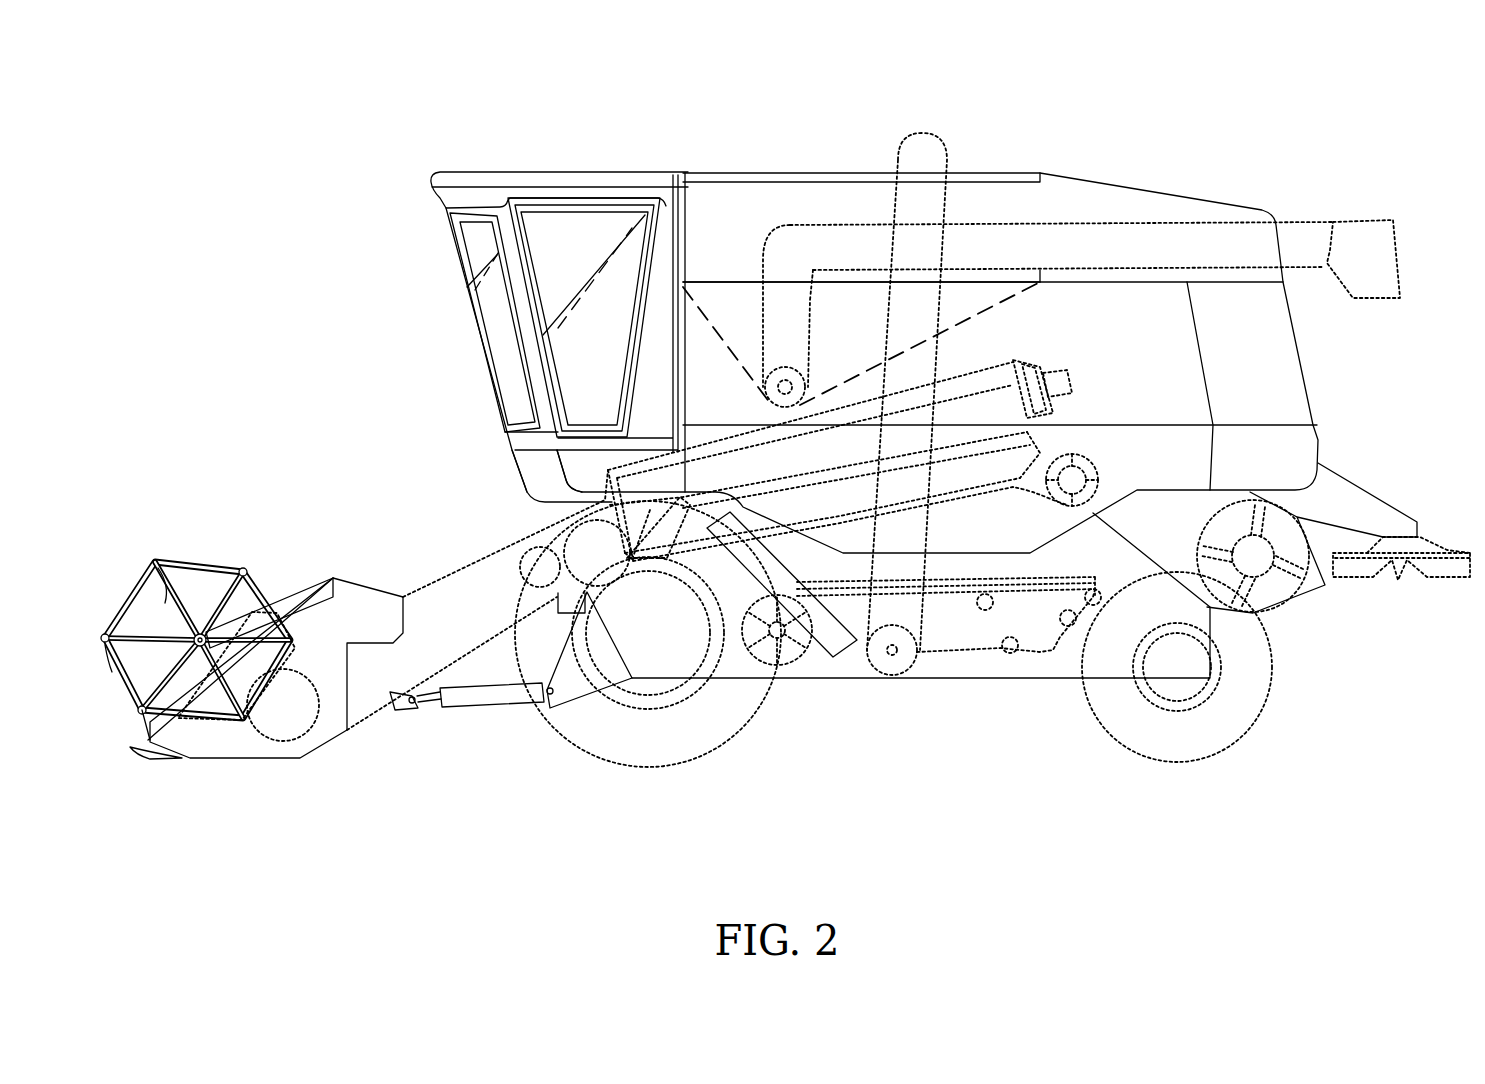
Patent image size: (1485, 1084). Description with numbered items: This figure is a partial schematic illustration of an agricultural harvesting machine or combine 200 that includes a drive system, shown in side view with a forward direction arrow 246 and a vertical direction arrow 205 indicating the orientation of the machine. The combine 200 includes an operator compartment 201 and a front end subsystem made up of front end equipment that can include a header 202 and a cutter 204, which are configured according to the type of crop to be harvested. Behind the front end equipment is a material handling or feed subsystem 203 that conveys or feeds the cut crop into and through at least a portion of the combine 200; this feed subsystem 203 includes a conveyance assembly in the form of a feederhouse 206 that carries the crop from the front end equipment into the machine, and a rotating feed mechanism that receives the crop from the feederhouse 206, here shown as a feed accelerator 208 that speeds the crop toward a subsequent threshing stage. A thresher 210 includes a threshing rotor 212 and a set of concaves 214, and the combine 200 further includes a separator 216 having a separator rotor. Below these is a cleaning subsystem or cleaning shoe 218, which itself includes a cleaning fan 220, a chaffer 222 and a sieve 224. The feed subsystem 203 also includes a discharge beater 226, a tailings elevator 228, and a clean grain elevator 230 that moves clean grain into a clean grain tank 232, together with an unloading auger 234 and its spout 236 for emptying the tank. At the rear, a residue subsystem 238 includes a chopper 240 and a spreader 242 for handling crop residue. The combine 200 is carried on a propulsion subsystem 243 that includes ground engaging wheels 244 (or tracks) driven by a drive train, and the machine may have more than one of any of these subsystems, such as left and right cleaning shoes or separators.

The combine 200 is at (1314, 77).
The operator compartment 201 is at (562, 176).
The header 202 is at (223, 560).
The feed subsystem 203 is at (474, 470).
The cutter 204 is at (190, 775).
The vertical direction arrow 205 is at (243, 512).
The feederhouse 206 is at (432, 566).
The feed accelerator 208 is at (570, 537).
The thresher 210 is at (966, 358).
The threshing rotor 212 is at (1016, 360).
The set of concaves 214 is at (1033, 455).
The separator 216 is at (953, 498).
The cleaning subsystem 218 is at (1098, 630).
The cleaning fan 220 is at (753, 648).
The chaffer 222 is at (1090, 572).
The sieve 224 is at (1000, 607).
The discharge beater 226 is at (1093, 465).
The tailings elevator 228 is at (830, 658).
The clean grain elevator 230 is at (918, 608).
The clean grain tank 232 is at (722, 264).
The unloading auger 234 is at (807, 387).
The spout 236 is at (1365, 214).
The residue subsystem 238 is at (1380, 480).
The chopper 240 is at (1257, 610).
The spreader 242 is at (1360, 583).
The propulsion subsystem 243 is at (933, 755).
The ground engaging wheels 244 is at (577, 747).
The forward direction arrow 246 is at (400, 393).